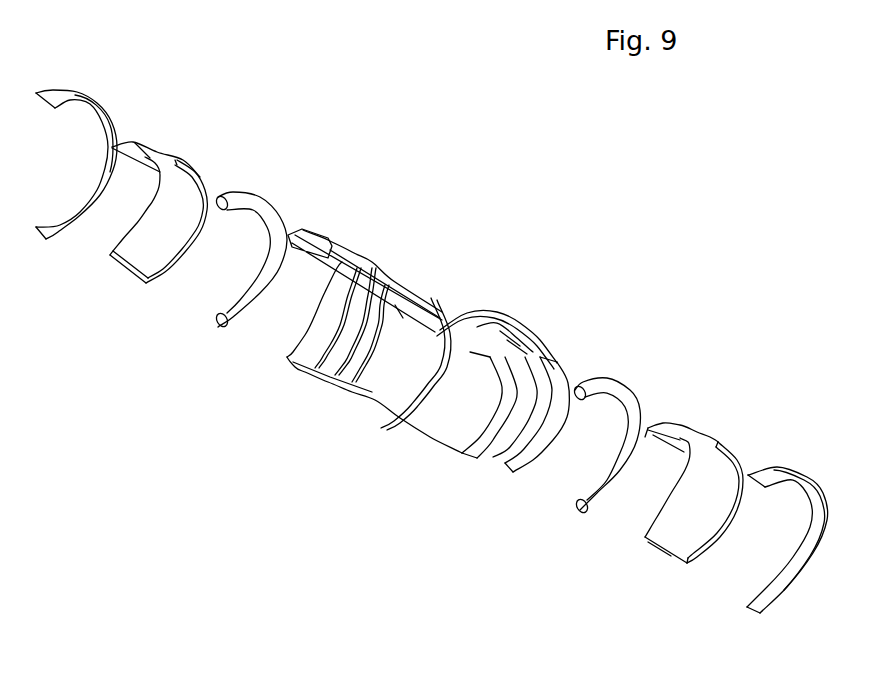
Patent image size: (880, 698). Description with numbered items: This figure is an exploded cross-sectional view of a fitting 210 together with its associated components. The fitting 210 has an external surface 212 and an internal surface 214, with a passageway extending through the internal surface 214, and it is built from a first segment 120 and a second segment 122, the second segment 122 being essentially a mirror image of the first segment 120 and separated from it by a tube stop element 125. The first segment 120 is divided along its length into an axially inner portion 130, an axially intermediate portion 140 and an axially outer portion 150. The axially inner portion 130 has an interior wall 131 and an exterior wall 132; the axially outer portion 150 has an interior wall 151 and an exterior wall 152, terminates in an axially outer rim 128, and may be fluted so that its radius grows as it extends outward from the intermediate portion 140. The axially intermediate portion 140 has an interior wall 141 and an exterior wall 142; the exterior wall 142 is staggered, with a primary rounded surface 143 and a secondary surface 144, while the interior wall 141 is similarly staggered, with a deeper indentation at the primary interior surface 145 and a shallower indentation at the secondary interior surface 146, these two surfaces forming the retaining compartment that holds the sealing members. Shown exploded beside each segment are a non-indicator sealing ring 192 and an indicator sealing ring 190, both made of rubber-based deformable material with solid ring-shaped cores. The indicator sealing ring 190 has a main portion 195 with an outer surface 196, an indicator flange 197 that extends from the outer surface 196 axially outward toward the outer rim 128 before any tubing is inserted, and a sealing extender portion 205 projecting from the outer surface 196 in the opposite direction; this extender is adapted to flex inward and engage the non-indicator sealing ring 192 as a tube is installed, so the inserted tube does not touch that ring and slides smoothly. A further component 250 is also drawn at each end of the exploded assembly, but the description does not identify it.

The first segment 120 is at (439, 392).
The second segment 122 is at (439, 345).
The tube stop element 125 is at (398, 310).
The axially outer rim 128 is at (571, 412).
The axially inner portion 130 is at (374, 371).
The interior wall 131 is at (443, 373).
The exterior wall 132 is at (402, 280).
The axially intermediate portion 140 is at (500, 448).
The interior wall 141 is at (490, 418).
The exterior wall 142 is at (510, 330).
The primary rounded surface 143 is at (559, 312).
The secondary surface 144 is at (508, 338).
The primary interior surface 145 is at (464, 450).
The secondary interior surface 146 is at (480, 458).
The axially outer portion 150 is at (519, 455).
The interior wall 151 is at (536, 430).
The exterior wall 152 is at (518, 347).
The indicator sealing ring 190 is at (446, 355).
The non-indicator sealing ring 192 is at (245, 197).
The main portion 195 is at (160, 155).
The outer surface 196 is at (142, 280).
The indicator flange 197 is at (684, 566).
The sealing extender portion 205 is at (671, 417).
The fitting 210 is at (653, 165).
The external surface 212 is at (420, 297).
The internal surface 214 is at (407, 363).
The clip 250 is at (46, 241).